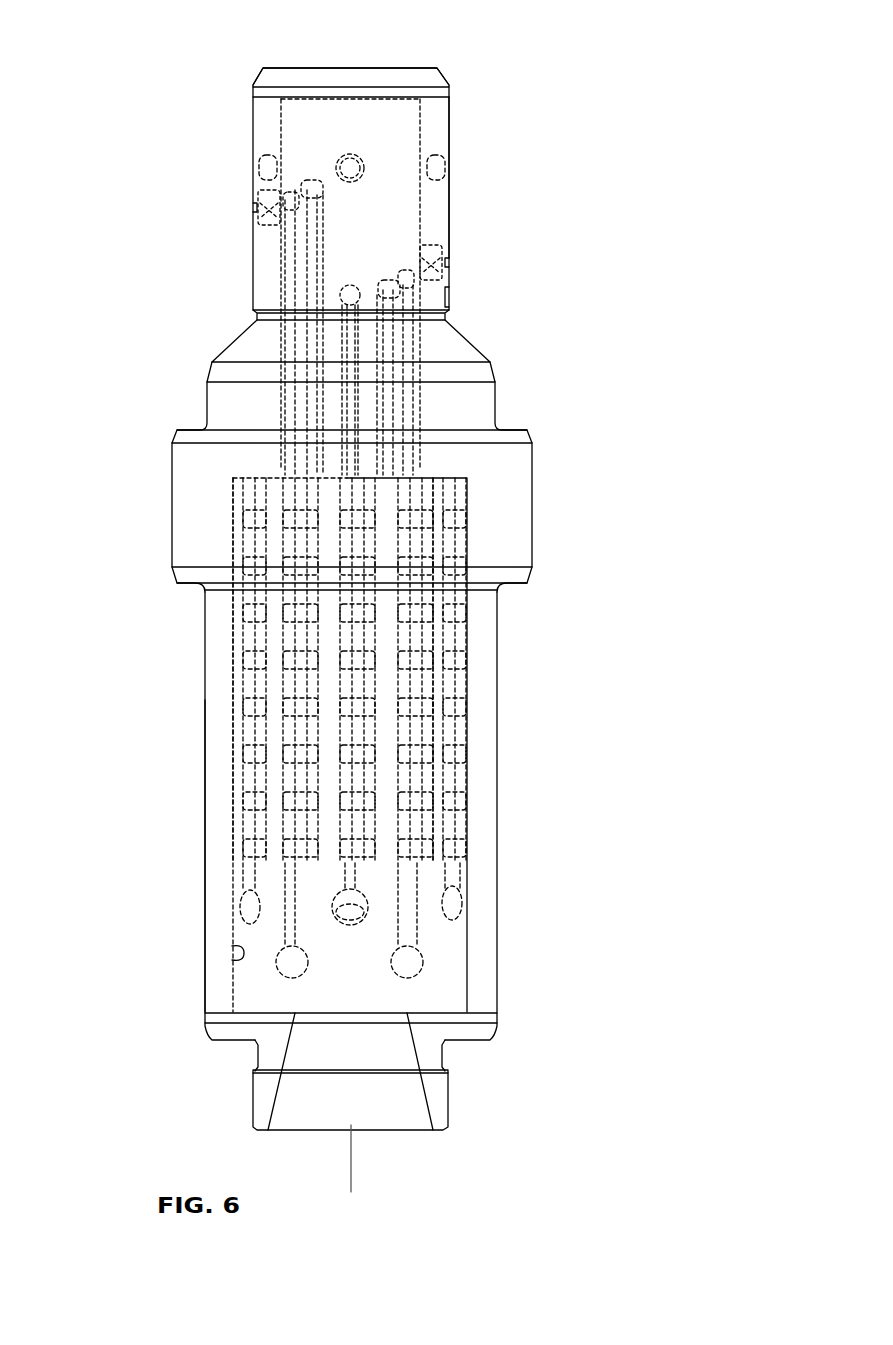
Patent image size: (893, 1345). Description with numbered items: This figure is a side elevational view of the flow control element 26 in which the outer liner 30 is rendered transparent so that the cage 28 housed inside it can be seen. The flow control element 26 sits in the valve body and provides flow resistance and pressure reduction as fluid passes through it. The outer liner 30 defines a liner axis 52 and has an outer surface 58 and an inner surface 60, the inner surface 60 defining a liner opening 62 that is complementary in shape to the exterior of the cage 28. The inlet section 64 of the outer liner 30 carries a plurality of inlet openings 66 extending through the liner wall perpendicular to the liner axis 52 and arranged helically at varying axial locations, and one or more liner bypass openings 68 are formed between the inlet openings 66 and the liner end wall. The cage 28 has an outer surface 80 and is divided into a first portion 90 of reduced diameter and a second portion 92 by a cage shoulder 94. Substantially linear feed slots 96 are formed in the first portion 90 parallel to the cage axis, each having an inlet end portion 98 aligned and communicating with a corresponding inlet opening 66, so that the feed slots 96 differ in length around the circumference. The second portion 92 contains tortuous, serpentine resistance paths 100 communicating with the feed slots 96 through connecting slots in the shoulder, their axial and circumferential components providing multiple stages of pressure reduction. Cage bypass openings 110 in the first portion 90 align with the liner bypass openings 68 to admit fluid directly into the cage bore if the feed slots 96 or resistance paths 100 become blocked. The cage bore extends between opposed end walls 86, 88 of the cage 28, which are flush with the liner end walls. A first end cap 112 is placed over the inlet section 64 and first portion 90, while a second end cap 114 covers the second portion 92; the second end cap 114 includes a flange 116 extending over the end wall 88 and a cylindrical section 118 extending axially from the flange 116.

The flow control element 26 is at (122, 101).
The cage 28 is at (473, 500).
The outer liner 30 is at (452, 125).
The liner axis 52 is at (351, 1165).
The outer surface 58 is at (205, 895).
The inner surface 60 is at (232, 946).
The liner opening 62 is at (465, 992).
The inlet section 64 is at (428, 205).
The inlet openings 66 is at (265, 222).
The liner bypass openings 68 is at (437, 170).
The outer surface 80 is at (420, 955).
The end wall 86 is at (304, 97).
The end wall 88 is at (248, 1015).
The first portion 90 is at (303, 140).
The second portion 92 is at (480, 741).
The cage shoulder 94 is at (433, 477).
The feed slots 96 is at (350, 358).
The inlet end portion 98 is at (352, 290).
The resistance paths 100 is at (418, 715).
The cage bypass openings 110 is at (357, 165).
The first end cap 112 is at (253, 77).
The second end cap 114 is at (470, 1043).
The flange 116 is at (222, 1030).
The cylindrical section 118 is at (445, 1100).